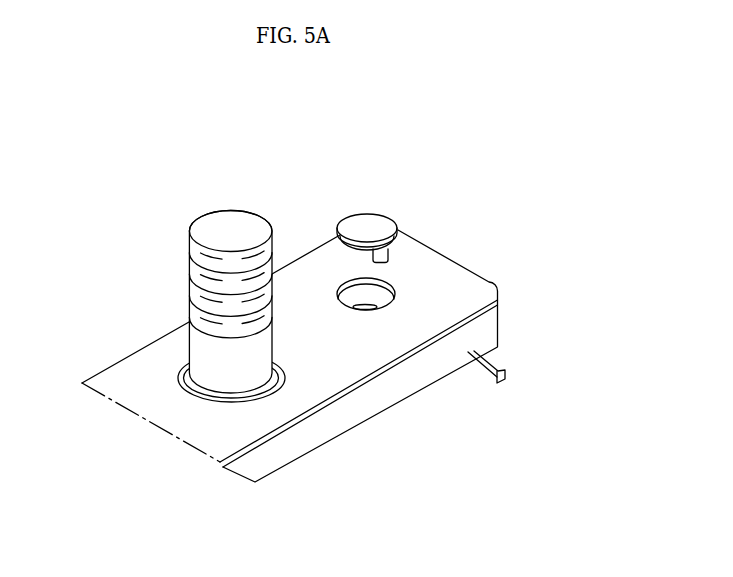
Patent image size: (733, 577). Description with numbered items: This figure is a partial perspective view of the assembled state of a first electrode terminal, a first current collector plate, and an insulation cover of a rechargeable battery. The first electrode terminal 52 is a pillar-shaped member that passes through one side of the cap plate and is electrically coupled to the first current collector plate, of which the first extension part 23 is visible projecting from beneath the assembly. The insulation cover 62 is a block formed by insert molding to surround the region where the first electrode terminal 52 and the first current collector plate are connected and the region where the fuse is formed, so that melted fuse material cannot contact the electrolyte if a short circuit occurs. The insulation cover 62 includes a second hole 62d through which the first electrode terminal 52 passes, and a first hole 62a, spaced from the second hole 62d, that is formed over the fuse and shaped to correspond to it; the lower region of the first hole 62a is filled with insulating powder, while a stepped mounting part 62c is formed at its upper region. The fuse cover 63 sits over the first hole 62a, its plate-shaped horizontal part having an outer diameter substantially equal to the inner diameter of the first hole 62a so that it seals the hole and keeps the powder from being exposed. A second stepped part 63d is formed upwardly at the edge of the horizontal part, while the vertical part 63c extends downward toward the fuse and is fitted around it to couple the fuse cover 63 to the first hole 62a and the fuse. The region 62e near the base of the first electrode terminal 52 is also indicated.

The first extension part 23 is at (505, 373).
The first electrode terminal 52 is at (218, 223).
The insulation cover 62 is at (477, 293).
The first hole 62a is at (398, 278).
The stepped mounting part 62c is at (382, 297).
The second hole 62d is at (185, 384).
The flange 62e is at (217, 400).
The fuse cover 63 is at (350, 222).
The vertical part 63c is at (392, 257).
The second stepped part 63d is at (398, 238).